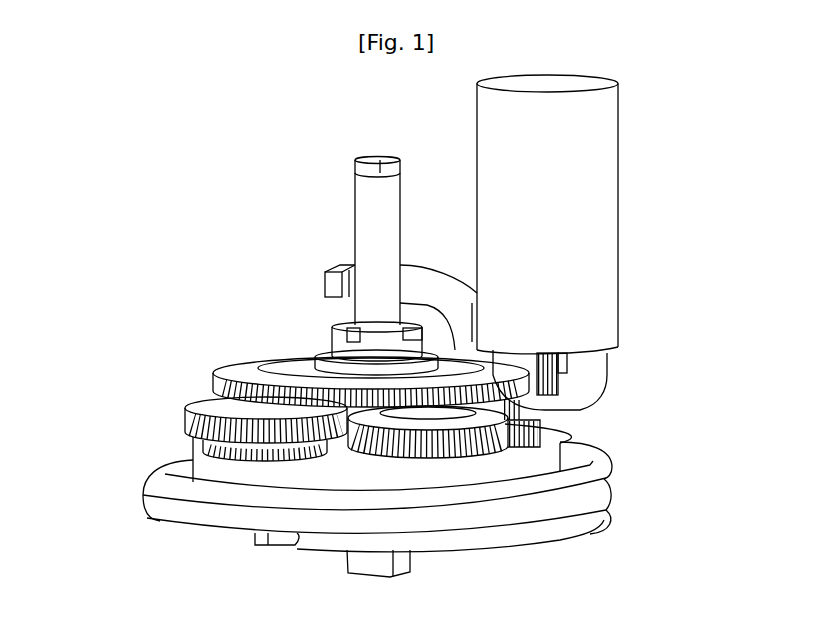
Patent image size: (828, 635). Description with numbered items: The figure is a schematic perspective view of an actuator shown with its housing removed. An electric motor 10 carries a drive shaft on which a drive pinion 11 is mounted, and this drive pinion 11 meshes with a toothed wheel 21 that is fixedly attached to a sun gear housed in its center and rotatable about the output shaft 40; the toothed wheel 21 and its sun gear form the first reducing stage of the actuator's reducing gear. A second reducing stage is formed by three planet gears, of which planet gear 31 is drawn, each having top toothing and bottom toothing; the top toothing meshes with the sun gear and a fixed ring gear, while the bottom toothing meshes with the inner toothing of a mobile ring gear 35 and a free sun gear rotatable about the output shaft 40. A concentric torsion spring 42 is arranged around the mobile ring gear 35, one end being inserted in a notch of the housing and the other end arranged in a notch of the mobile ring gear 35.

The electric motor 10 is at (602, 260).
The drive pinion 11 is at (560, 390).
The toothed wheel 21 is at (250, 378).
The planet gear 31 is at (205, 403).
The mobile ring gear 35 is at (207, 463).
The output shaft 40 is at (370, 213).
The torsion spring 42 is at (600, 493).